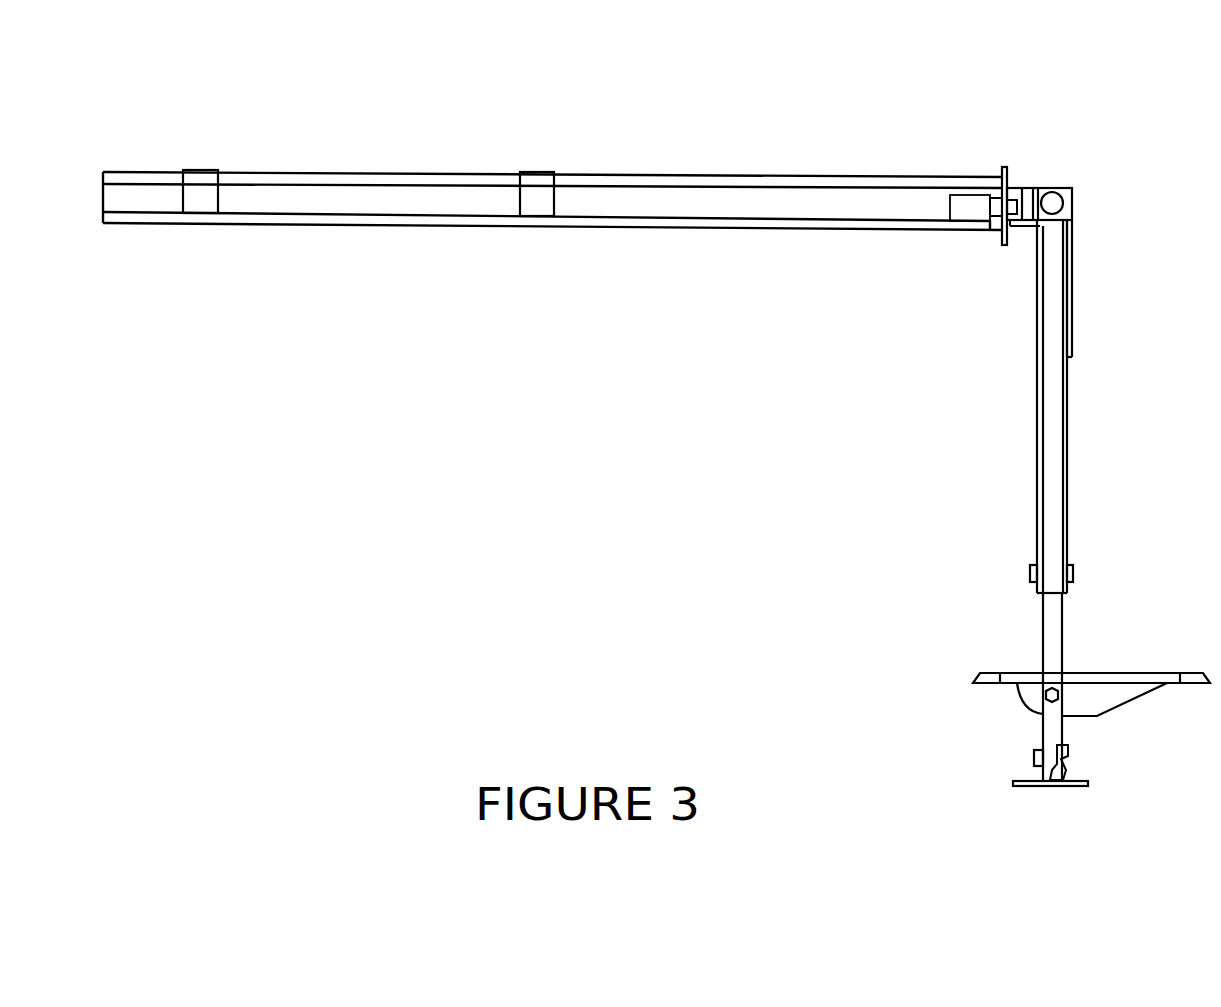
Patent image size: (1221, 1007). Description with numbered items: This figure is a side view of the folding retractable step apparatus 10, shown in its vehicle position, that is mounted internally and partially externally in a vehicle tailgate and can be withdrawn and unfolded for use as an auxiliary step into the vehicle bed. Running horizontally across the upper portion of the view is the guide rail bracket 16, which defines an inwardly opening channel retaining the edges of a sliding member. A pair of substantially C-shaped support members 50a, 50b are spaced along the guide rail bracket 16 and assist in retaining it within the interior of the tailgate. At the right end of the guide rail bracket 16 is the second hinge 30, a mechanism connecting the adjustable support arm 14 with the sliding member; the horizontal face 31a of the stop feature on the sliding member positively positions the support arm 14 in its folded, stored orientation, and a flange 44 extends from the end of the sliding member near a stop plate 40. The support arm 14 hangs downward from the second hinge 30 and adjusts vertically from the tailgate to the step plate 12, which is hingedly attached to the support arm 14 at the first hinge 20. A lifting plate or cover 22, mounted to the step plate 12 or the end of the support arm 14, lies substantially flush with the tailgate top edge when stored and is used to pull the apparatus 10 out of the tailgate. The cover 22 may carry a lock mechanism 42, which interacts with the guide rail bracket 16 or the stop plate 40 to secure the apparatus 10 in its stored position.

The folding retractable step apparatus 10 is at (657, 563).
The step plate 12 is at (1140, 673).
The adjustable support arm 14 is at (1036, 477).
The guide rail bracket 16 is at (680, 205).
The first hinge 20 is at (1027, 712).
The lifting plate or cover 22 is at (1080, 786).
The second hinge 30 is at (1078, 180).
The horizontal stop feature face 31a is at (1058, 190).
The stop plate 40 is at (1002, 170).
The lock mechanism 42 is at (1066, 752).
The flange 44 is at (1031, 188).
The support member 50a is at (540, 173).
The support member 50b is at (202, 172).